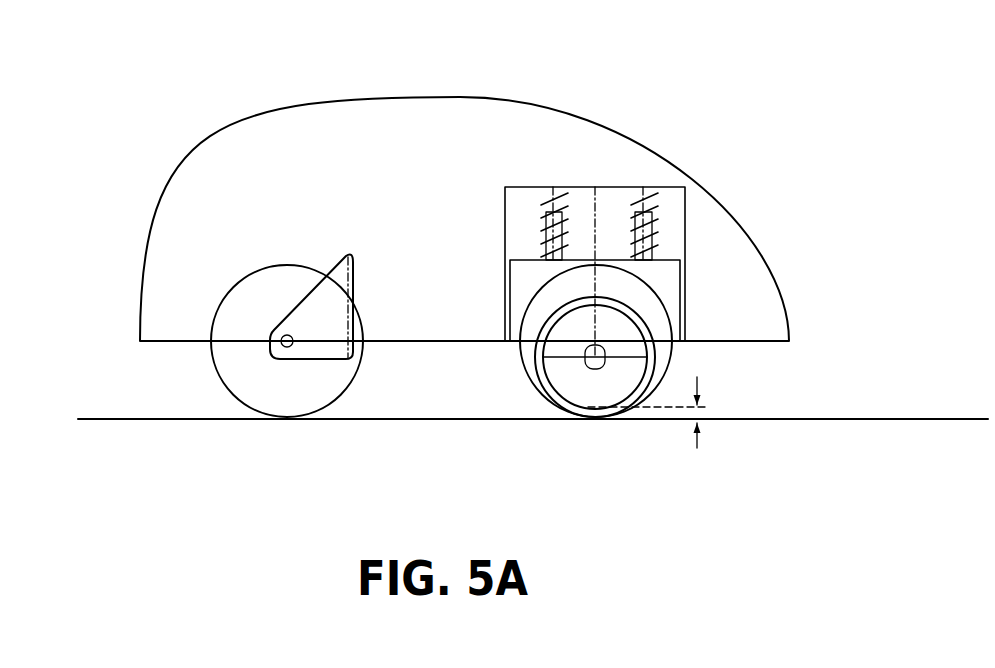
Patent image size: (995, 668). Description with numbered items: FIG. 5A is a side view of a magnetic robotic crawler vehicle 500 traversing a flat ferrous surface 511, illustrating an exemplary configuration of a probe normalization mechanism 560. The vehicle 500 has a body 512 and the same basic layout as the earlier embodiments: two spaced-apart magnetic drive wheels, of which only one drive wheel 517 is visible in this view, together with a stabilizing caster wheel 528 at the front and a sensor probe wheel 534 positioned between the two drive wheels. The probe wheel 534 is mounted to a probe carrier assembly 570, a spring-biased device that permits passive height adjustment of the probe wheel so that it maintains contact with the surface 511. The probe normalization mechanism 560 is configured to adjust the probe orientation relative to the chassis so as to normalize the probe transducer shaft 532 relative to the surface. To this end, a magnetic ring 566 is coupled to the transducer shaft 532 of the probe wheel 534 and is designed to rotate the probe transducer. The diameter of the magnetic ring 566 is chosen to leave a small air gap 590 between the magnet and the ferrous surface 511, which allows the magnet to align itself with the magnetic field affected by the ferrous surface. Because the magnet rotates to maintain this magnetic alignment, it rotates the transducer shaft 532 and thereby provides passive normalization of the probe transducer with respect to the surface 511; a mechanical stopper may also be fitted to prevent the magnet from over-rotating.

The crawler vehicle 500 is at (220, 75).
The surface 511 is at (132, 417).
The body shell 512 is at (397, 100).
The stabilizing caster wheel 528 is at (293, 369).
The magnetic drive wheel 517 is at (525, 332).
The probe normalization mechanism 560 is at (538, 318).
The probe wheel 534 is at (543, 382).
The magnetic ring 566 is at (622, 380).
The probe transducer shaft 532 is at (602, 348).
The probe carrier assembly 570 is at (580, 208).
The air gap 590 is at (707, 412).